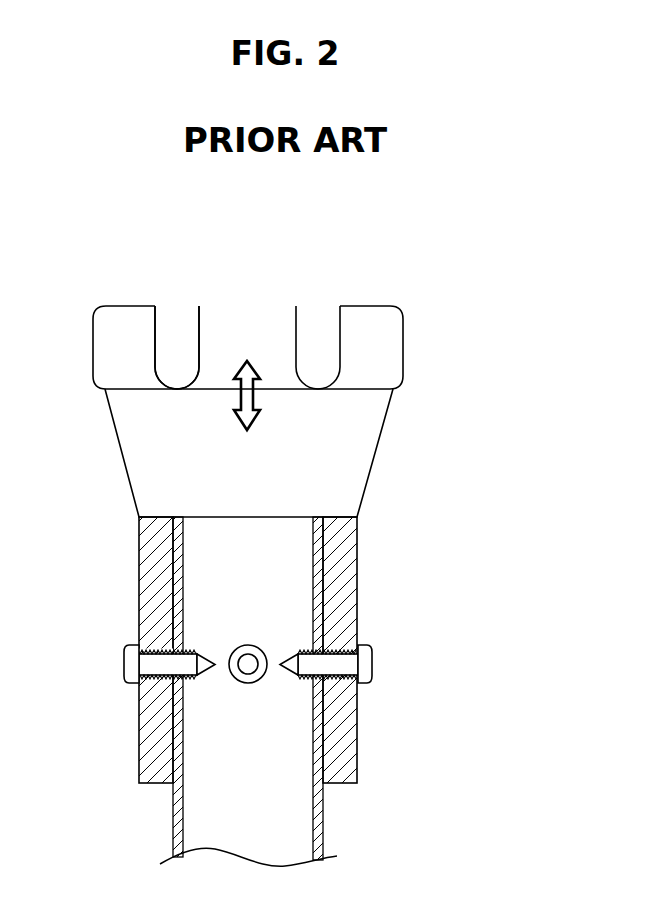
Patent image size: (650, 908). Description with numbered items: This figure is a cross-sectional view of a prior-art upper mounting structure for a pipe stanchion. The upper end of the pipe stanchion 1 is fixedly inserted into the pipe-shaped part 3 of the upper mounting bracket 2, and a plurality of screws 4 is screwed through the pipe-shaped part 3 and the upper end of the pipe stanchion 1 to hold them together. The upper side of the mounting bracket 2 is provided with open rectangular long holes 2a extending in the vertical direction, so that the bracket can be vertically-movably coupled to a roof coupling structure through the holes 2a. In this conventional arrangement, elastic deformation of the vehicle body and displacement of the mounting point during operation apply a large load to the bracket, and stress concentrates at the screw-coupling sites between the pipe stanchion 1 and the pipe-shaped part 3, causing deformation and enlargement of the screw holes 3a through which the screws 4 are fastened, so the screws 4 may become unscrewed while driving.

The pipe stanchion 1 is at (318, 817).
The upper mounting bracket 2 is at (400, 468).
The open rectangular long holes 2a is at (155, 357).
The pipe-shaped part 3 is at (350, 737).
The screw holes 3a is at (148, 652).
The screws 4 is at (367, 663).